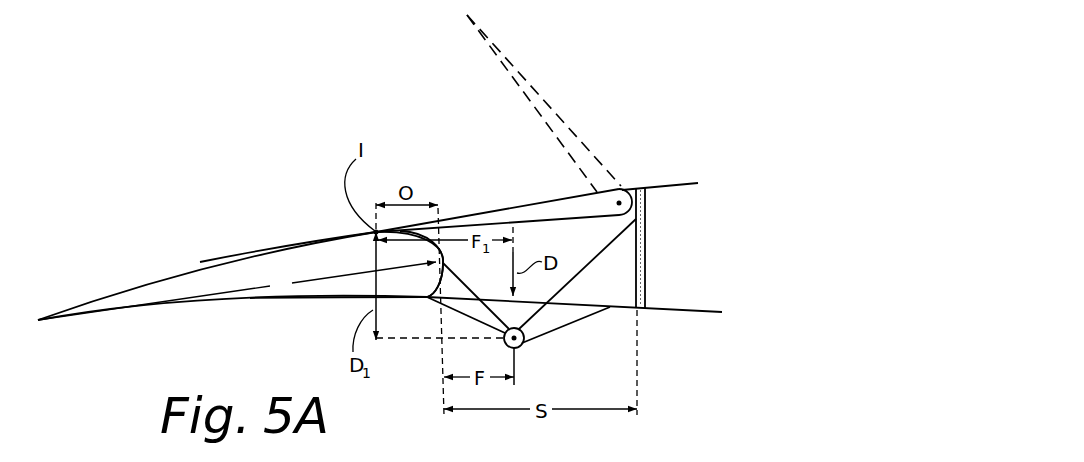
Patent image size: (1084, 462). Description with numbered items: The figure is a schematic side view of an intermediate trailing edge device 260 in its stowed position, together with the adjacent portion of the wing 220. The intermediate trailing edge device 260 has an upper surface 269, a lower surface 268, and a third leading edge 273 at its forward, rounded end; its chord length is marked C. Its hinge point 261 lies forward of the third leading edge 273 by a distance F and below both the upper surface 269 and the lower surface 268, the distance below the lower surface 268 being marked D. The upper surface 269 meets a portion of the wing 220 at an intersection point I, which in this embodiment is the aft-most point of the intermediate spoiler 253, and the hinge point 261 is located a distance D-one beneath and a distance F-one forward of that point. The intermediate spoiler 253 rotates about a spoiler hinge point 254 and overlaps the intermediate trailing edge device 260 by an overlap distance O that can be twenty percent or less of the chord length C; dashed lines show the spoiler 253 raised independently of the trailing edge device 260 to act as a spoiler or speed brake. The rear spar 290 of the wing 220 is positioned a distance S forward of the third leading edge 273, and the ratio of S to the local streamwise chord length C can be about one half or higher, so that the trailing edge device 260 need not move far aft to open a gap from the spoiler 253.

The wing 220 is at (656, 176).
The intermediate spoiler 253 is at (542, 208).
The spoiler hinge point 254 is at (647, 208).
The intermediate trailing edge device 260 is at (317, 258).
The hinge point 261 is at (527, 343).
The lower surface 268 is at (350, 297).
The upper surface 269 is at (333, 236).
The third leading edge 273 is at (446, 257).
The rear spar 290 is at (647, 285).